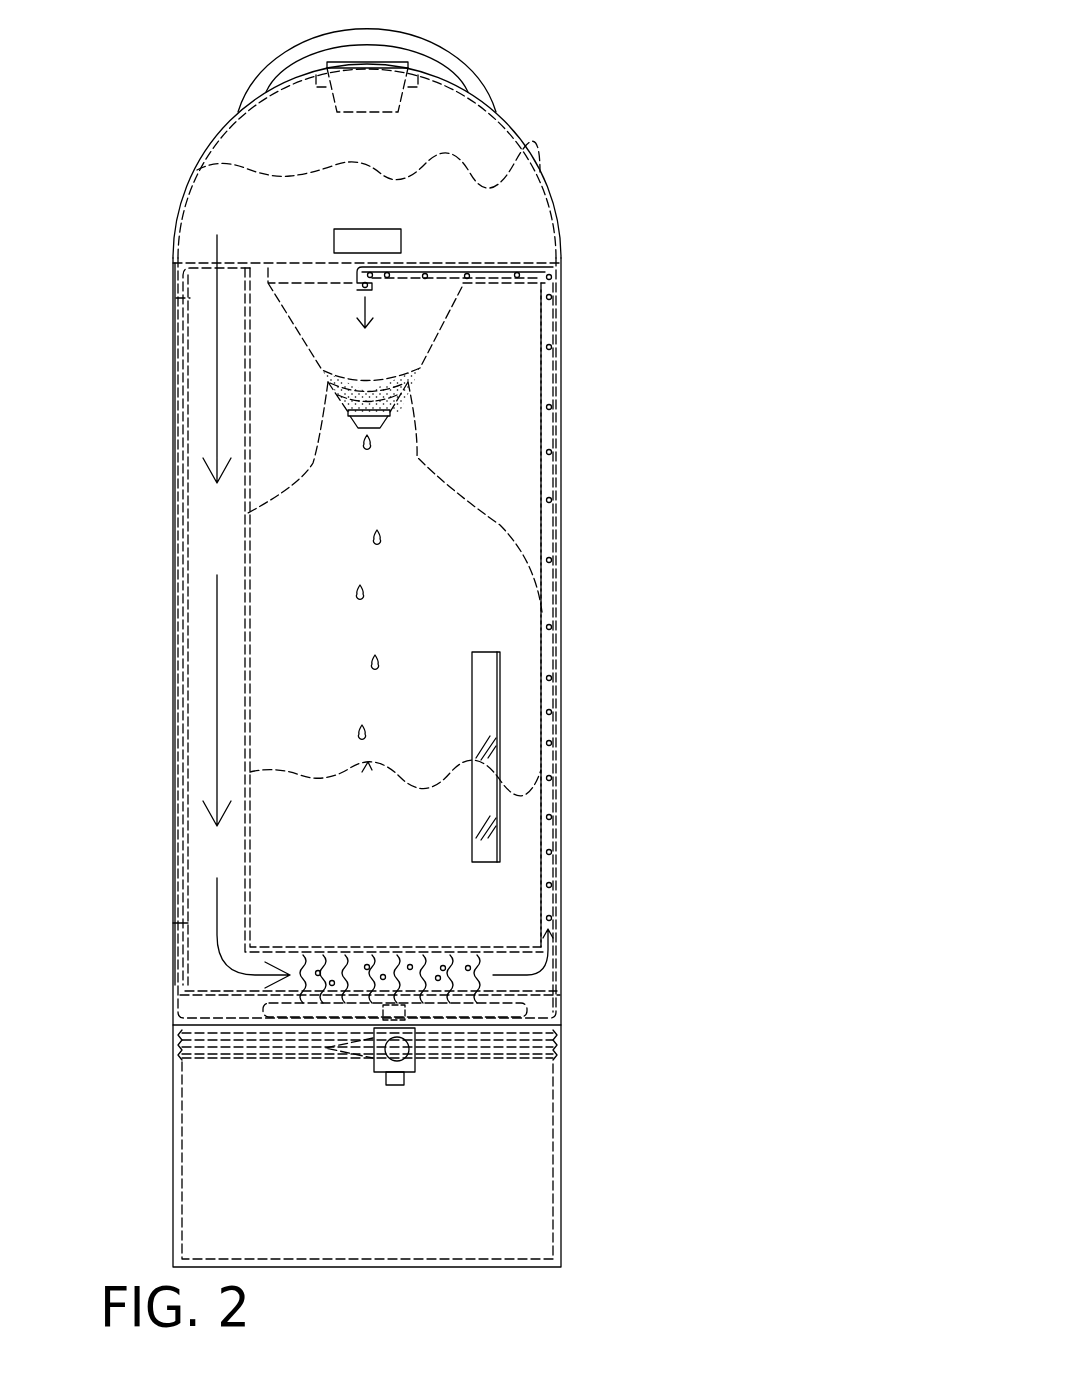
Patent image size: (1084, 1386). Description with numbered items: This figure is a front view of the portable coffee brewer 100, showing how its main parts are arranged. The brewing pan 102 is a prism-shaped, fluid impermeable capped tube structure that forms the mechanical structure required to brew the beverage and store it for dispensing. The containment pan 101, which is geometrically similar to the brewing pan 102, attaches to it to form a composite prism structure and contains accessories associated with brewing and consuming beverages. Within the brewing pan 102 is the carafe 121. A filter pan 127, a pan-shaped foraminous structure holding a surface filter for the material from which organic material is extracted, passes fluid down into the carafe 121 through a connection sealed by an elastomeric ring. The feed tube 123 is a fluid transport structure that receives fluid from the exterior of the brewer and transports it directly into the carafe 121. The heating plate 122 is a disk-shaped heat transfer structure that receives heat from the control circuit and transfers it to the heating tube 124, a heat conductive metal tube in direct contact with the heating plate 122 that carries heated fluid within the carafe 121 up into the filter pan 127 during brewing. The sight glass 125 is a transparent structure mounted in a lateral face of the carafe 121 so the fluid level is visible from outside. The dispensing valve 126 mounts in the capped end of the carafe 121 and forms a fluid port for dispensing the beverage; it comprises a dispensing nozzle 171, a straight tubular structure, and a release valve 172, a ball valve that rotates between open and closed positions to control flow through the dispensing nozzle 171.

The portable coffee brewer 100 is at (572, 102).
The containment pan 101 is at (555, 1127).
The brewing pan 102 is at (570, 532).
The carafe 121 is at (500, 525).
The heating plate 122 is at (480, 1007).
The feed tube 123 is at (230, 755).
The heating tube 124 is at (548, 622).
The sight glass 125 is at (473, 668).
The dispensing valve 126 is at (420, 1078).
The filter pan 127 is at (440, 322).
The dispensing nozzle 171 is at (383, 1072).
The release valve 172 is at (357, 1052).